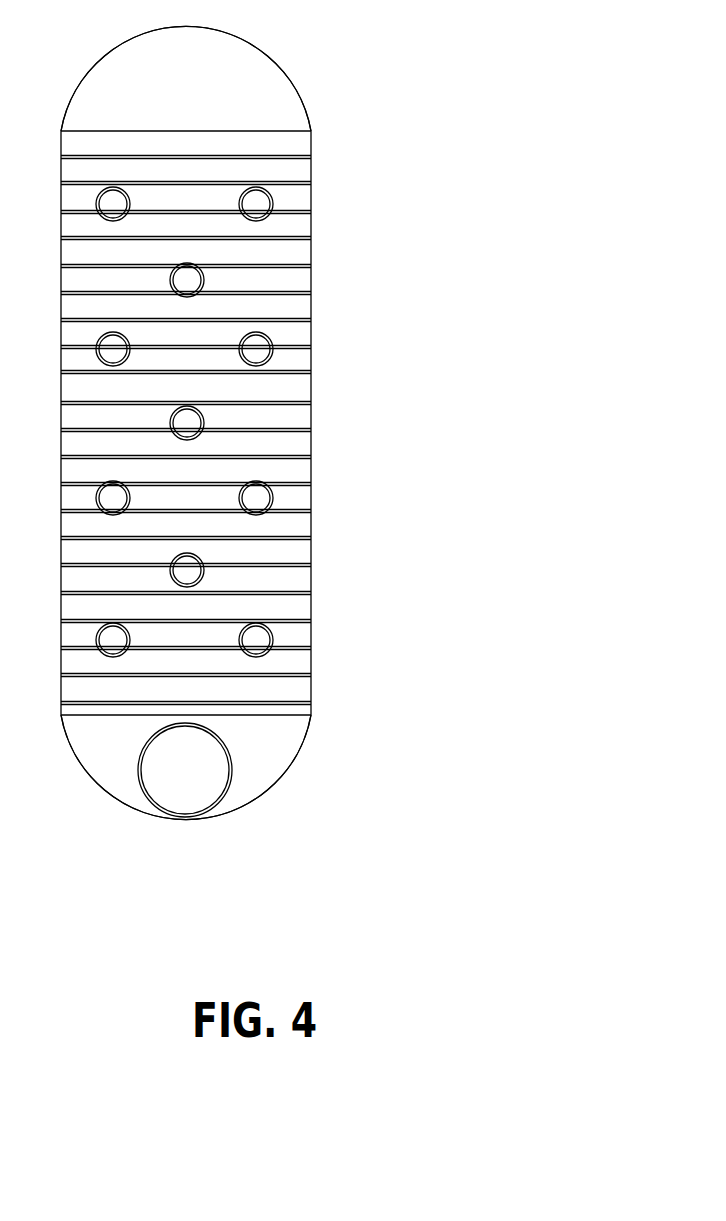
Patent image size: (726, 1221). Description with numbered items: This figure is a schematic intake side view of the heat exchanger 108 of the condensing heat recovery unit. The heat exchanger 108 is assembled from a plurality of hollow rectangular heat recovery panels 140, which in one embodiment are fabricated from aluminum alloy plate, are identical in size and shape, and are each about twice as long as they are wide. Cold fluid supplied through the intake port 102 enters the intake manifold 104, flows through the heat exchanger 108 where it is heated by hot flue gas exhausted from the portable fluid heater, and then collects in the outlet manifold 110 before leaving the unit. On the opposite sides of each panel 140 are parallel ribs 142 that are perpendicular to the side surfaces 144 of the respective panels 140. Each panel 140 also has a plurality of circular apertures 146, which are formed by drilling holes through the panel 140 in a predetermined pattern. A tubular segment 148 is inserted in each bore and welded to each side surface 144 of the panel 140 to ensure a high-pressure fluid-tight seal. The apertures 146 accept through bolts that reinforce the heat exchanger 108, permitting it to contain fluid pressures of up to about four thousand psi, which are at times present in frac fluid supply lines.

The intake port 102 is at (217, 805).
The intake manifold 104 is at (288, 755).
The heat exchanger 108 is at (420, 98).
The outlet manifold 110 is at (247, 66).
The heat recovery panel 140 is at (328, 318).
The parallel ribs 142 is at (305, 513).
The side surface 144 is at (303, 607).
The circular aperture 146 is at (257, 212).
The tubular segment 148 is at (273, 205).